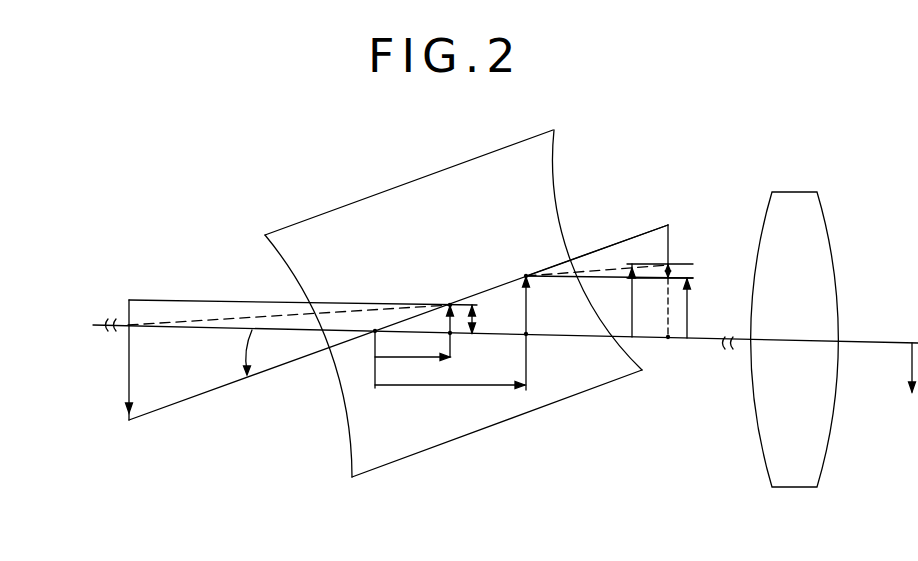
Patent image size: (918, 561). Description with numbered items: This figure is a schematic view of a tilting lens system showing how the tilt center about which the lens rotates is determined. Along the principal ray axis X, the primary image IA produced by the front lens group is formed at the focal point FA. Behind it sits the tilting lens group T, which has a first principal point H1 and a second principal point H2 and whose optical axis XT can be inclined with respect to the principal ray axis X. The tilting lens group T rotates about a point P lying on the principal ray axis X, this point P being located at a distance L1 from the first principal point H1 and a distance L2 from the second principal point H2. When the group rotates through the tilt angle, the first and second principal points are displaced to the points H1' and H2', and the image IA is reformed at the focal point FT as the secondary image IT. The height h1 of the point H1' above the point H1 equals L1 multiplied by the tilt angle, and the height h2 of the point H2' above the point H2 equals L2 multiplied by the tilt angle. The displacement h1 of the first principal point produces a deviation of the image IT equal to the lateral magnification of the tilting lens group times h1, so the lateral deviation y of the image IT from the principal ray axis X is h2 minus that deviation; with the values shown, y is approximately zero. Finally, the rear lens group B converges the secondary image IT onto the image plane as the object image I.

The focal point FA is at (128, 322).
The primary image IA is at (127, 369).
The tilt center point P is at (375, 330).
The displaced first principal point H1' is at (447, 280).
The first principal point H1 is at (477, 338).
The height of the first principal point h1 is at (485, 319).
The displaced second principal point H2' is at (600, 252).
The second principal point H2 is at (550, 333).
The distance from point P to first principal point L1 is at (412, 359).
The distance from point P to second principal point L2 is at (450, 375).
The optical axis of the tilting lens group XT is at (620, 242).
The secondary image IT is at (673, 240).
The focal point FT is at (670, 340).
The lateral deviation y is at (639, 300).
The height of the second principal point h2 is at (701, 308).
The tilting lens group T is at (460, 438).
The rear lens group B is at (765, 465).
The principal ray axis X is at (862, 343).
The object image I is at (910, 360).